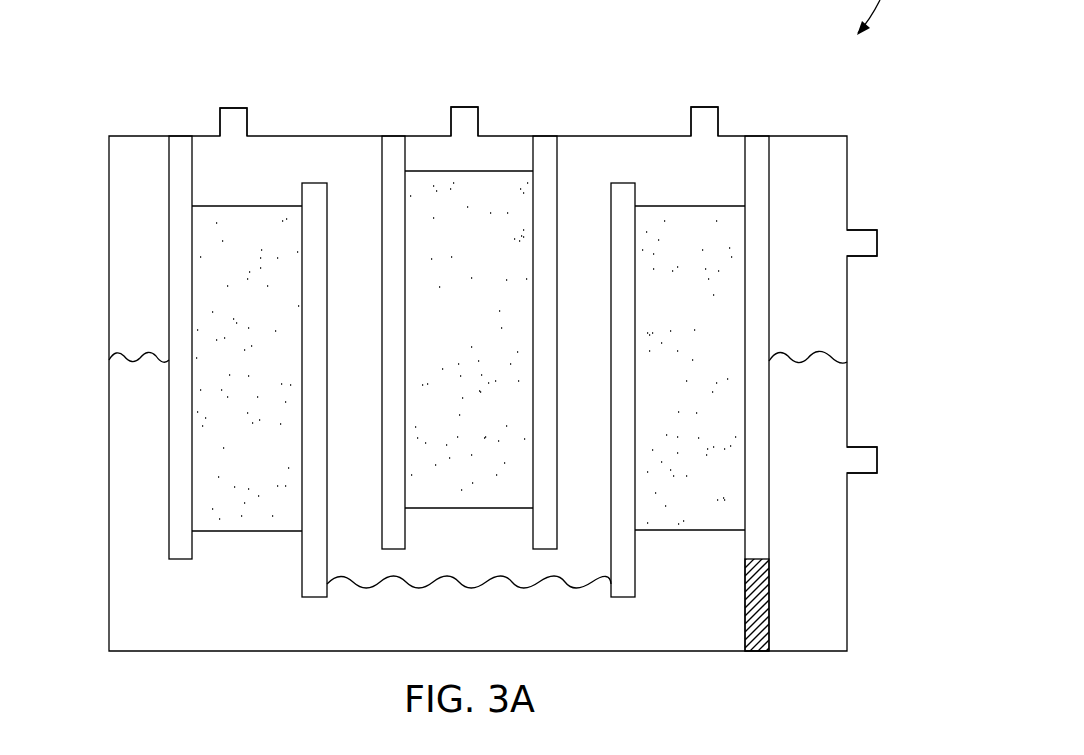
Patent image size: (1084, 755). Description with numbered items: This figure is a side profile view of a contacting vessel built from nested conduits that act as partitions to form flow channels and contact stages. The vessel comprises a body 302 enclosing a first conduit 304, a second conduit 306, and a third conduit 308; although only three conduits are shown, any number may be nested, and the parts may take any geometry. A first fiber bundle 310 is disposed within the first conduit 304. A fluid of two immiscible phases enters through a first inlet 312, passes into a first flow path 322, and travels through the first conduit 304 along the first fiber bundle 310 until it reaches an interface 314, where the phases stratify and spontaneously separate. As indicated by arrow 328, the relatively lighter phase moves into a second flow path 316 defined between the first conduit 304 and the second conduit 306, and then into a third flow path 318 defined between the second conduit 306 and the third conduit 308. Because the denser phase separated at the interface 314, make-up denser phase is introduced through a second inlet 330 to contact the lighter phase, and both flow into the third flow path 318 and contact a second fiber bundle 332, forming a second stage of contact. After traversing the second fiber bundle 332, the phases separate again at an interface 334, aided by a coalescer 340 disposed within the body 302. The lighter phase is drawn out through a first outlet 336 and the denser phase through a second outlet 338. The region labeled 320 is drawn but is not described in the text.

The body 302 is at (848, 182).
The first conduit 304 is at (393, 145).
The second conduit 306 is at (313, 583).
The third conduit 308 is at (181, 143).
The first fiber bundle 310 is at (512, 207).
The first inlet 312 is at (465, 107).
The interface 314 is at (470, 587).
The second flow path 316 is at (358, 183).
The third flow path 318 is at (271, 161).
The housing side compartment 320 is at (807, 183).
The first flow path 322 is at (503, 143).
The arrow 328 is at (582, 520).
The second inlet 330 is at (705, 107).
The second fiber bundle 332 is at (202, 241).
The interface 334 is at (833, 355).
The first outlet 336 is at (860, 228).
The second outlet 338 is at (860, 447).
The coalescer 340 is at (770, 625).